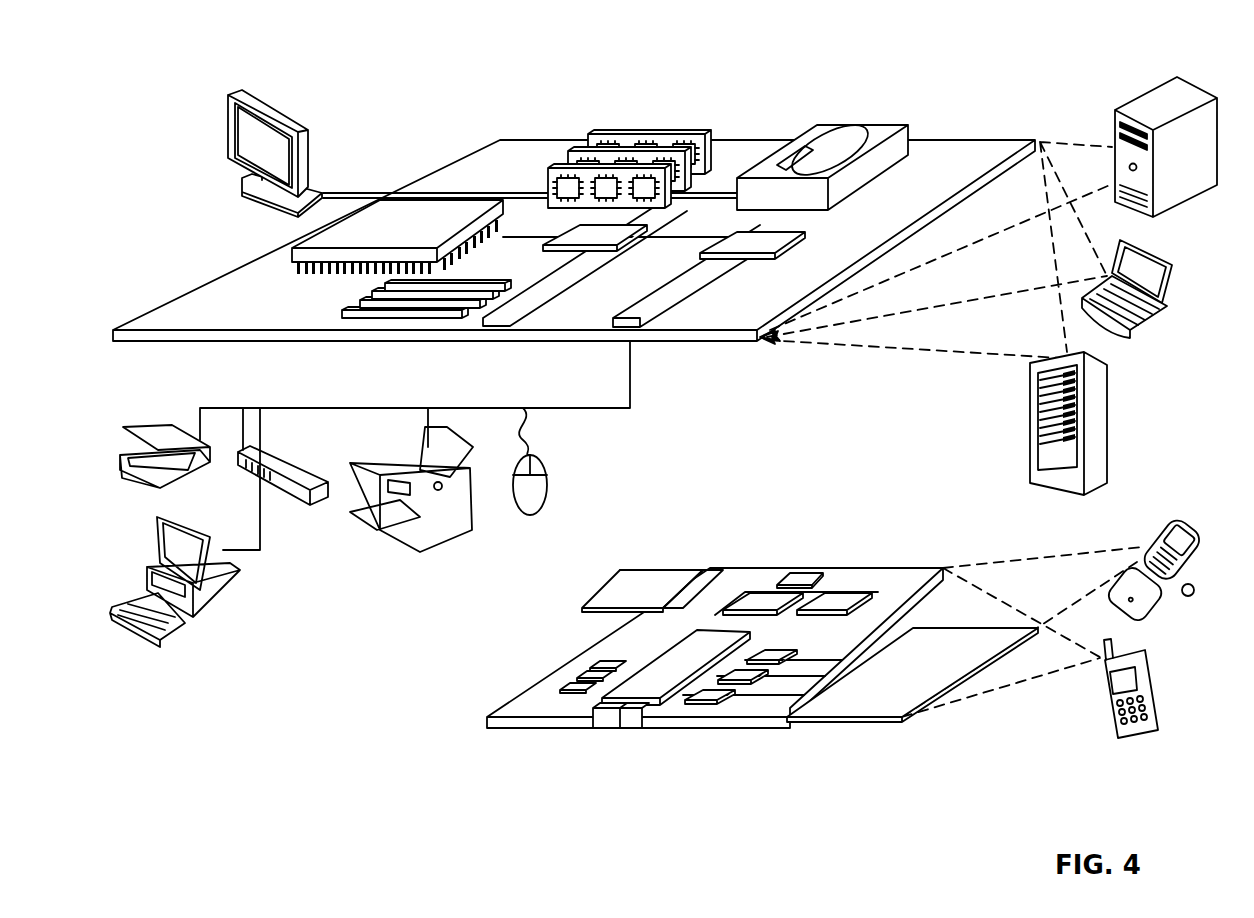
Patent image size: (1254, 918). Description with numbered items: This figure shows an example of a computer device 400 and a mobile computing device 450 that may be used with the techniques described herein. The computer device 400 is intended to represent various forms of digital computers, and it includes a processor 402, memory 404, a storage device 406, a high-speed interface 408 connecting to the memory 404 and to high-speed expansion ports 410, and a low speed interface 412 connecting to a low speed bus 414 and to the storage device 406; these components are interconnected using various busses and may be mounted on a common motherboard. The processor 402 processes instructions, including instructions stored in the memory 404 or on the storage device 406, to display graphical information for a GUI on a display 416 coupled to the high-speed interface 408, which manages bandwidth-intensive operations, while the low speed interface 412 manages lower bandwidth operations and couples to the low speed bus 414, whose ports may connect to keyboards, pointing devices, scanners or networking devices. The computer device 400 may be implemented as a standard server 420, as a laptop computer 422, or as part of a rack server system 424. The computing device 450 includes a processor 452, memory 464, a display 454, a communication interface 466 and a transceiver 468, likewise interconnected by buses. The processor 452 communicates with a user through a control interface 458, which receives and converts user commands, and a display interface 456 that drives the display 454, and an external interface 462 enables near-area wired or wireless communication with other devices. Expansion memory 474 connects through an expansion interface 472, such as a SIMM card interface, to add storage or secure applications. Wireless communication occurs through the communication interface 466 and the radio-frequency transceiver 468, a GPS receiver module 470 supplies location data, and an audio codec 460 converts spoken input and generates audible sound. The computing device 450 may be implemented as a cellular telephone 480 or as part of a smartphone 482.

The computer device 400 is at (412, 116).
The processor 402 is at (296, 250).
The memory 404 is at (606, 136).
The storage device 406 is at (822, 126).
The high-speed interface 408 is at (572, 235).
The high-speed expansion ports 410 is at (350, 305).
The low speed interface 412 is at (737, 238).
The low speed bus 414 is at (640, 328).
The display 416 is at (232, 95).
The standard server 420 is at (1112, 126).
The laptop computer 422 is at (1177, 266).
The rack server system 424 is at (1030, 447).
The computing device 450 is at (460, 730).
The processor 452 is at (650, 690).
The display 454 is at (873, 703).
The display interface 456 is at (718, 697).
The control interface 458 is at (772, 655).
The audio codec 460 is at (775, 656).
The external interface 462 is at (620, 720).
The memory 464 is at (580, 683).
The communication interface 466 is at (760, 603).
The transceiver 468 is at (832, 600).
The GPS receiver module 470 is at (810, 574).
The expansion interface 472 is at (693, 580).
The expansion memory 474 is at (620, 582).
The cellular telephone 480 is at (1160, 525).
The smartphone 482 is at (1110, 692).